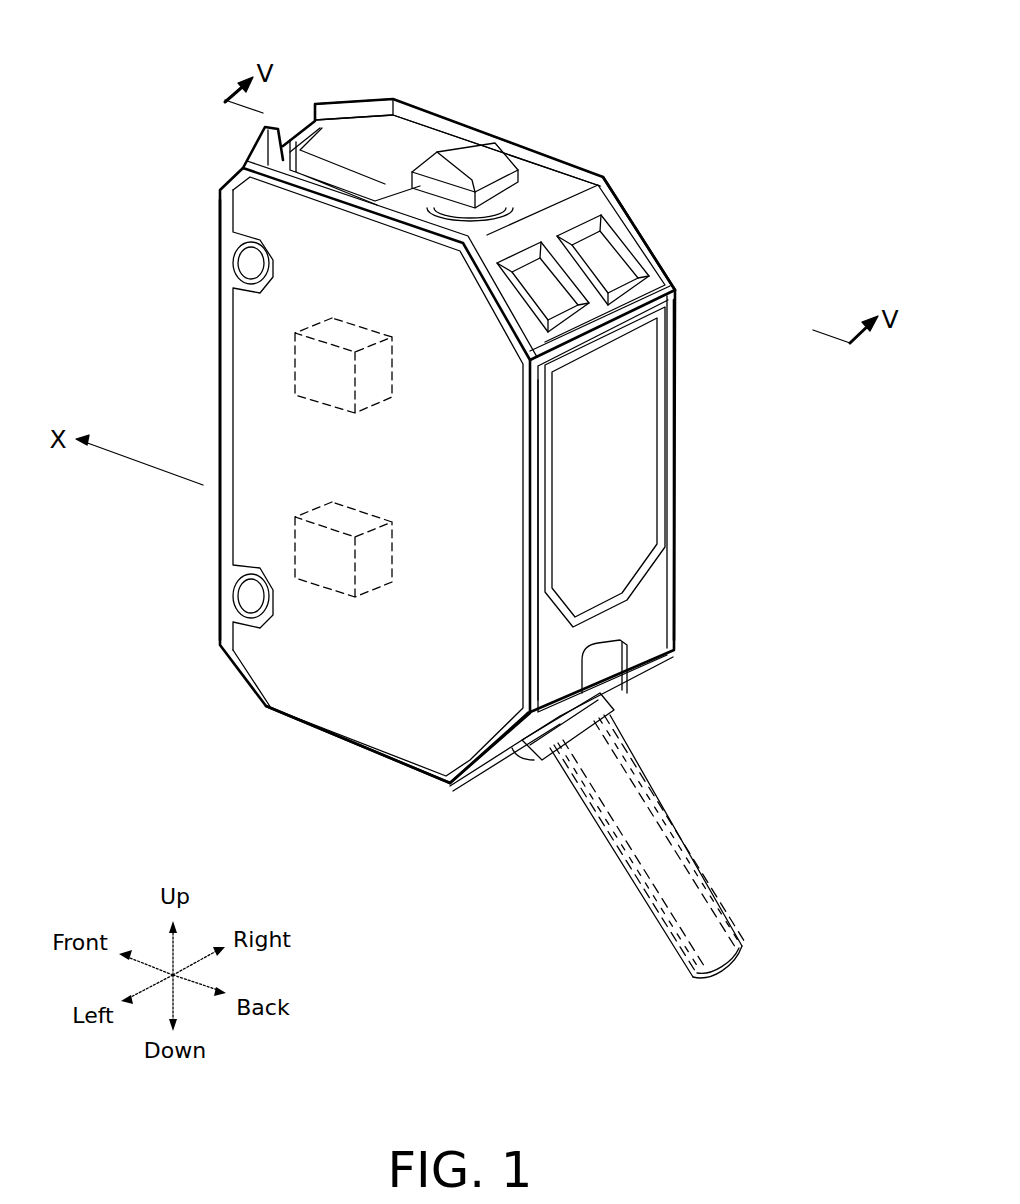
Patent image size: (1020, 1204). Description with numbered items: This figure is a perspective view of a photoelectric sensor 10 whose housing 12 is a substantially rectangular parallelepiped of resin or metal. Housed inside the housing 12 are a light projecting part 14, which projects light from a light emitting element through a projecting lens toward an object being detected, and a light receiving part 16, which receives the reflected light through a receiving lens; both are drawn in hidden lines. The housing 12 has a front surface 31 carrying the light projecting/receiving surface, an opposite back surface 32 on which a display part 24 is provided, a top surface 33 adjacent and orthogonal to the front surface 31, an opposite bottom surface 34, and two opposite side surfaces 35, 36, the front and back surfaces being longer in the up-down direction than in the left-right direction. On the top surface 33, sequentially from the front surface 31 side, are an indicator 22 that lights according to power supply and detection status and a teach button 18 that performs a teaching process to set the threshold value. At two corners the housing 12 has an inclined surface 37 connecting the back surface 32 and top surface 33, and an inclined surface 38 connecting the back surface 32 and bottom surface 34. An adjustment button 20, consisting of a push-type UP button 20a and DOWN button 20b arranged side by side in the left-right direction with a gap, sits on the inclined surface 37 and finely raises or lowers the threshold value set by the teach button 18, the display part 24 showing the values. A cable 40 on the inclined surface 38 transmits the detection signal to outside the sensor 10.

The photoelectric sensor 10 is at (493, 497).
The housing 12 is at (572, 153).
The light projecting part 14 is at (318, 588).
The light receiving part 16 is at (295, 352).
The teach button 18 is at (462, 173).
The adjustment button 20 is at (823, 156).
The UP button 20a is at (632, 253).
The DOWN button 20b is at (563, 273).
The indicator 22 is at (397, 133).
The display part 24 is at (598, 463).
The front surface 31 is at (218, 293).
The back surface 32 is at (663, 617).
The top surface 33 is at (425, 215).
The bottom surface 34 is at (374, 752).
The side surface 35 is at (470, 710).
The side surface 36 is at (677, 507).
The inclined surface 37 is at (668, 278).
The inclined surface 38 is at (637, 683).
The cable 40 is at (688, 853).